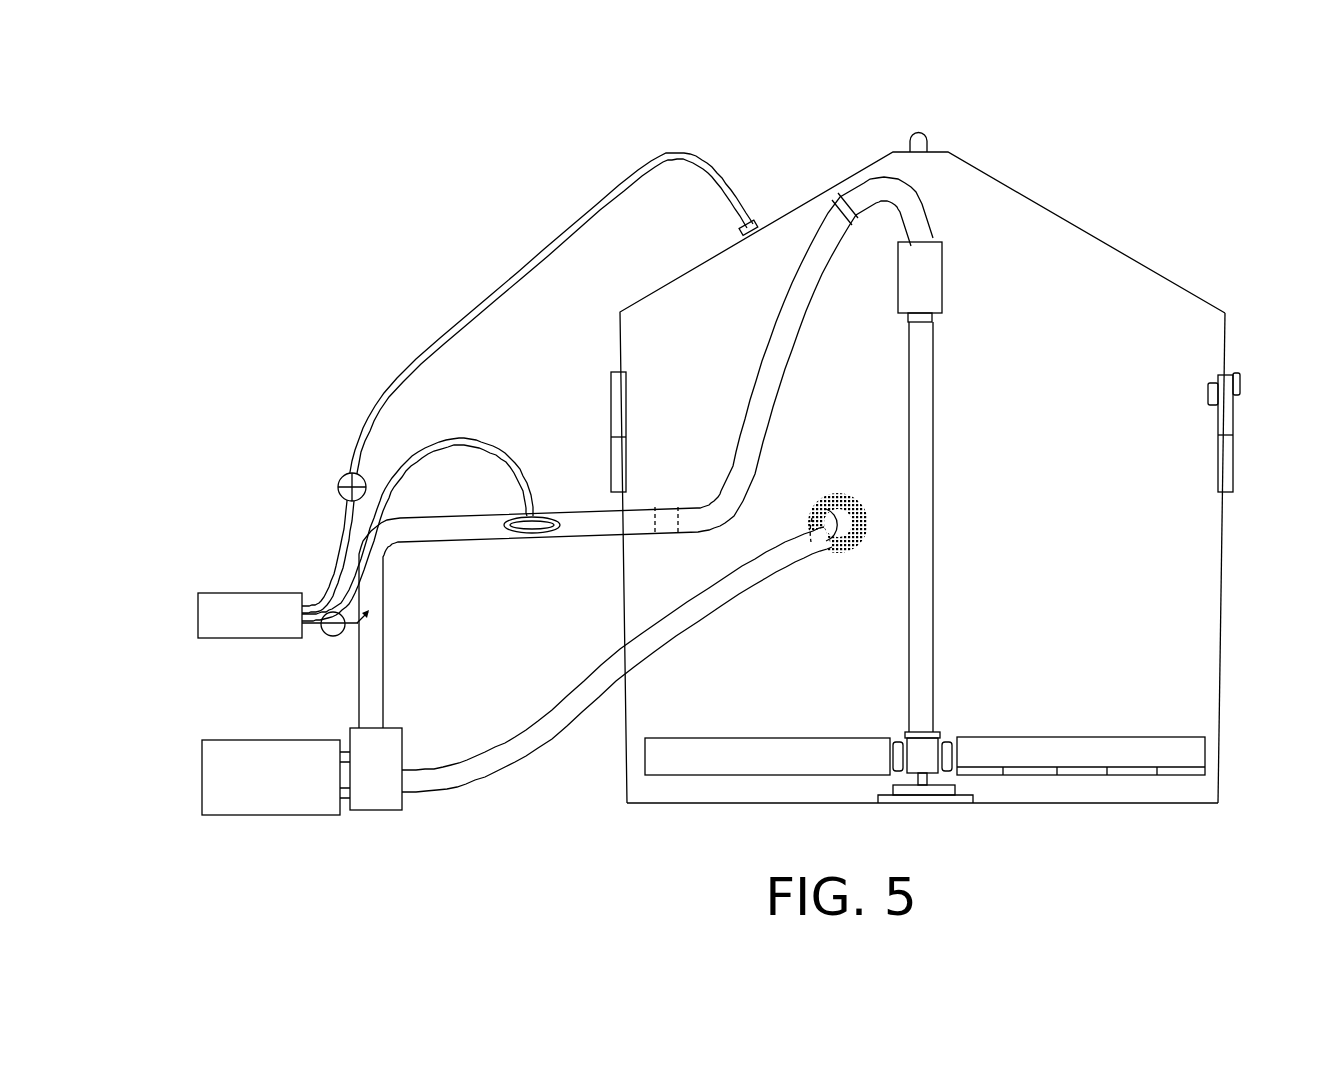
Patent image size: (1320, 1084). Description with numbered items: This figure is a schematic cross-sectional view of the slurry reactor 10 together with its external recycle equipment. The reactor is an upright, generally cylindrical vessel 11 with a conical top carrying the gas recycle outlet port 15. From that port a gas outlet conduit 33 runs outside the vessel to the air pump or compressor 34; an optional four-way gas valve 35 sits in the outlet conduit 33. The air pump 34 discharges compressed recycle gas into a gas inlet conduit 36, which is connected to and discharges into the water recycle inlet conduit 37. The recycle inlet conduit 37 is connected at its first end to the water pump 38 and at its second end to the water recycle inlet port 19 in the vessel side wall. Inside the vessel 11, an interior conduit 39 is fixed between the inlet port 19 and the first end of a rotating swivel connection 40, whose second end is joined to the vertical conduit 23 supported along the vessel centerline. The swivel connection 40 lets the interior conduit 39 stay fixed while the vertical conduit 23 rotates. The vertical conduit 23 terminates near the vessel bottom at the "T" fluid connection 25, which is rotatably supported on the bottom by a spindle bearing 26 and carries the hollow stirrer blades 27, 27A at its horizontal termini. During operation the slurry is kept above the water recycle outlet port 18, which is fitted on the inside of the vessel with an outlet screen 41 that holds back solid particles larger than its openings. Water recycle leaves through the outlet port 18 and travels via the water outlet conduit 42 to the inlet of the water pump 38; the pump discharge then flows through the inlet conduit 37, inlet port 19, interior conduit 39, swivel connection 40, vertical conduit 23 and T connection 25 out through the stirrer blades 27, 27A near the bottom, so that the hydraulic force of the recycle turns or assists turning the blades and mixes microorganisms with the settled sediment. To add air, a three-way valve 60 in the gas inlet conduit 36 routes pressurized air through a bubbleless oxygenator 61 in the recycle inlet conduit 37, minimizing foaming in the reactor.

The slurry reactor 10 is at (1122, 236).
The cylindrical vessel 11 is at (1219, 537).
The gas recycle outlet port 15 is at (756, 223).
The water recycle outlet port 18 is at (826, 527).
The water recycle inlet port 19 is at (662, 504).
The vertical conduit 23 is at (935, 447).
The "T" fluid connection 25 is at (930, 748).
The spindle bearing 26 is at (940, 792).
The hollow stirrer blade 27 is at (718, 748).
The hollow stirrer blade 27A is at (1103, 750).
The gas outlet conduit 33 is at (680, 156).
The air pump or compressor 34 is at (270, 593).
The 4-way gas valve 35 is at (341, 478).
The gas inlet conduit 36 is at (322, 637).
The water recycle inlet conduit 37 is at (405, 527).
The water pump 38 is at (243, 742).
The interior conduit 39 is at (772, 372).
The rotating swivel connection 40 is at (932, 250).
The outlet screen 41 is at (845, 499).
The water outlet conduit 42 is at (677, 618).
The three-way valve 60 is at (336, 637).
The bubbleless oxygenator 61 is at (431, 529).